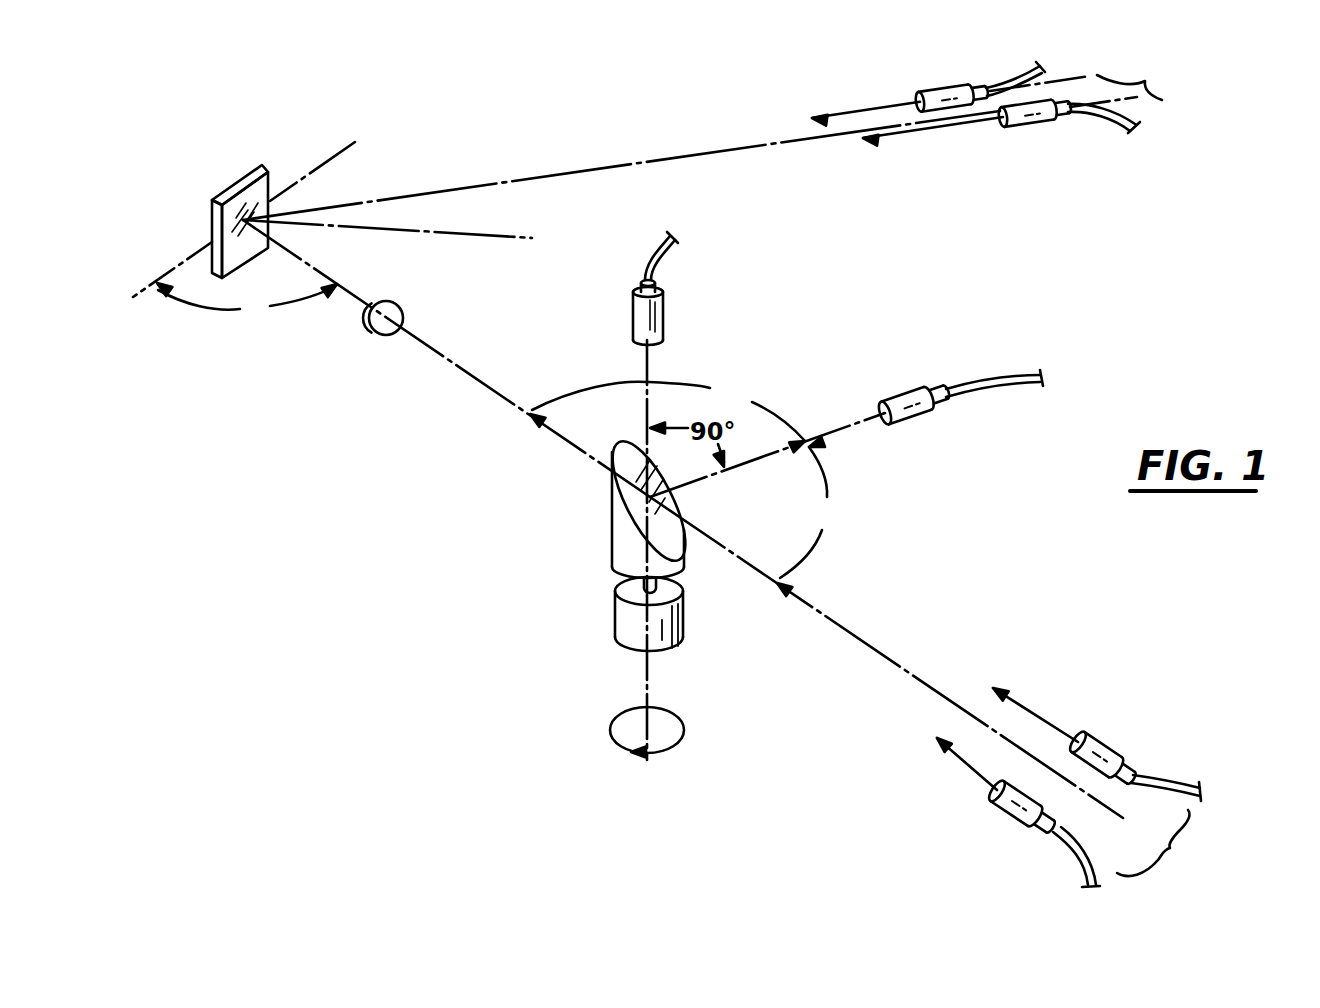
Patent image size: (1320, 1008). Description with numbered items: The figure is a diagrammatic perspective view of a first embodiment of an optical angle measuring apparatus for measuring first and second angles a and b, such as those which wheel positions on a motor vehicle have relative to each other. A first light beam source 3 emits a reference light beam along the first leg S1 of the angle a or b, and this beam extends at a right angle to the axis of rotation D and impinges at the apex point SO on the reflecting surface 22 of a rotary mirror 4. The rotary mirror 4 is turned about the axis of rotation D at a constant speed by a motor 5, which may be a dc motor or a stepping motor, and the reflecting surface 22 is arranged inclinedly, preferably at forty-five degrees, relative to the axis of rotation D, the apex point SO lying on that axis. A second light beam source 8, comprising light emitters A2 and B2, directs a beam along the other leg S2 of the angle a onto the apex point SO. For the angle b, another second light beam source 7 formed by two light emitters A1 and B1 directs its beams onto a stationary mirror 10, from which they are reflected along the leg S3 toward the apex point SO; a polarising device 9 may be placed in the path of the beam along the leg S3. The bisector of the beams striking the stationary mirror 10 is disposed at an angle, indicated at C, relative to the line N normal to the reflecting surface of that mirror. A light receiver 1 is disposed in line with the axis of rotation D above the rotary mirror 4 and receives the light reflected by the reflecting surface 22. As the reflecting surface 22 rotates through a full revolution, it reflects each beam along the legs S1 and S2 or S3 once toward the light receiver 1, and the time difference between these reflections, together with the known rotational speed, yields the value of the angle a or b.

The light receiver 1 is at (663, 312).
The first light beam source 3 is at (922, 410).
The rotary mirror 4 is at (630, 553).
The motor 5 is at (630, 630).
The second light beam source 7 is at (1129, 78).
The second light beam source 8 is at (1153, 844).
The polarising device 9 is at (371, 337).
The stationary mirror 10 is at (220, 195).
The reflecting surface 22 is at (672, 540).
The light emitter A1 is at (938, 92).
The light emitter B1 is at (1015, 127).
The light emitter A2 is at (1097, 740).
The light emitter B2 is at (1003, 805).
The first leg S1 is at (830, 432).
The second leg S2 is at (853, 633).
The leg of angle b S3 is at (470, 373).
The apex point SO is at (640, 500).
The axis of rotation D is at (645, 378).
The line normal to the reflecting surface of the fixed mirror N is at (490, 240).
The angle c C is at (247, 302).
The first angle a is at (805, 516).
The second angle b is at (667, 414).